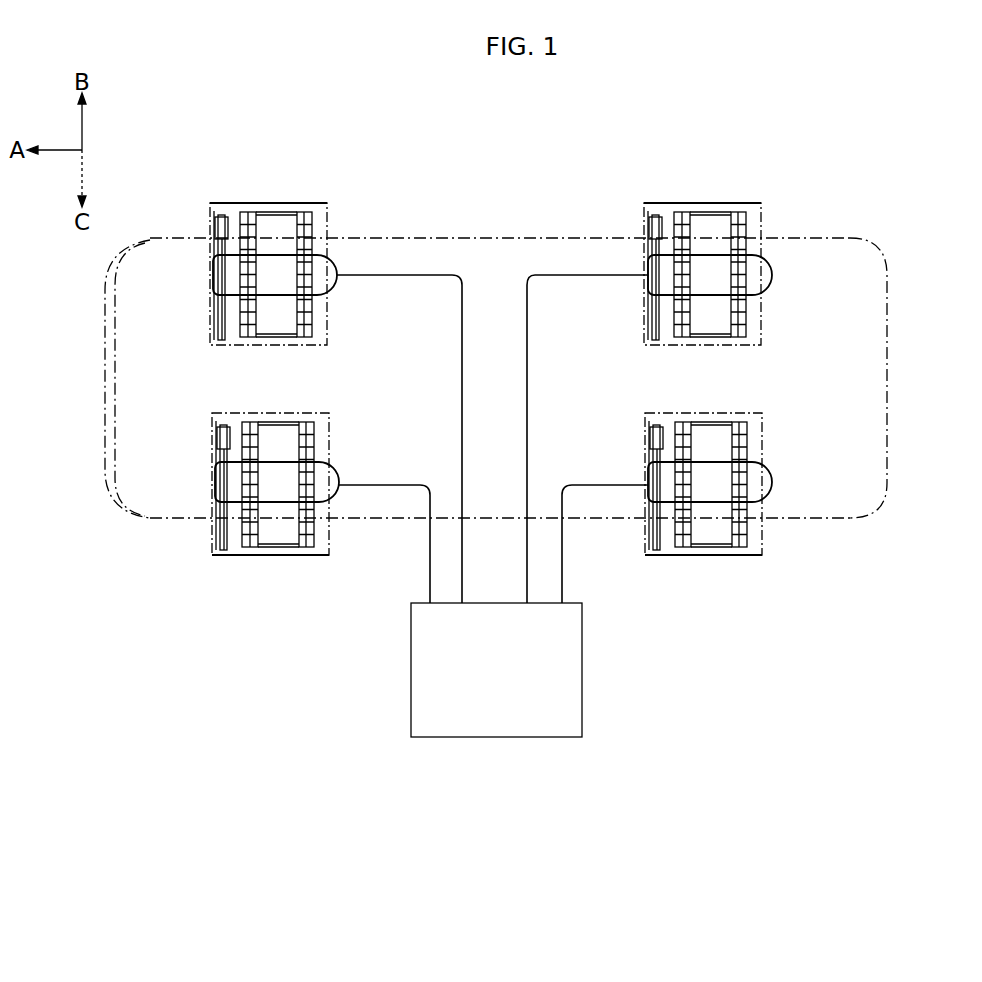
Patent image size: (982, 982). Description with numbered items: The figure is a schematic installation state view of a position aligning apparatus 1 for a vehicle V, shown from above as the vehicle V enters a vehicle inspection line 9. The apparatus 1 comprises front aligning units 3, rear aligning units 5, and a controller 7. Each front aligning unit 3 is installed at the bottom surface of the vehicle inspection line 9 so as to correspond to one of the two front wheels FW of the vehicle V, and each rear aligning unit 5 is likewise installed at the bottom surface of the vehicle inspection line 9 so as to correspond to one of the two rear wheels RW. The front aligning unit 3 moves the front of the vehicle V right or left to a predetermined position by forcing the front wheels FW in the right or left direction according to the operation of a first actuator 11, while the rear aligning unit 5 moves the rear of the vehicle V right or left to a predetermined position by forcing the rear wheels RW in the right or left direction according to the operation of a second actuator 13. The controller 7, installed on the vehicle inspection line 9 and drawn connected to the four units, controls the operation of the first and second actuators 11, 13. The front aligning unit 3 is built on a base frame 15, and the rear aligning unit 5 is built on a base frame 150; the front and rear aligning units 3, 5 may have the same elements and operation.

The position aligning apparatus 1 is at (905, 196).
The front aligning unit 3 is at (212, 557).
The rear aligning unit 5 is at (641, 195).
The controller 7 is at (411, 706).
The vehicle inspection line 9 is at (398, 180).
The first actuator 11 is at (205, 318).
The second actuator 13 is at (771, 327).
The base frame 15 is at (325, 203).
The base frame 150 is at (750, 203).
The front wheels FW is at (270, 255).
The rear wheels RW is at (705, 255).
The vehicle V is at (470, 236).